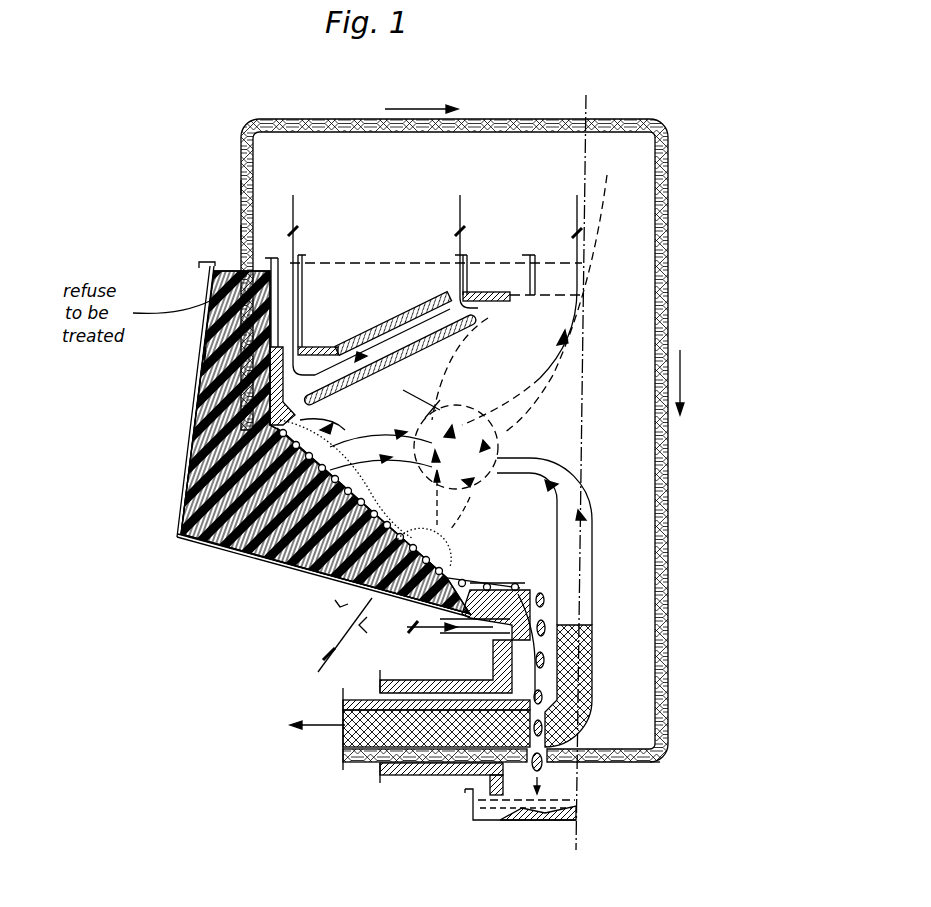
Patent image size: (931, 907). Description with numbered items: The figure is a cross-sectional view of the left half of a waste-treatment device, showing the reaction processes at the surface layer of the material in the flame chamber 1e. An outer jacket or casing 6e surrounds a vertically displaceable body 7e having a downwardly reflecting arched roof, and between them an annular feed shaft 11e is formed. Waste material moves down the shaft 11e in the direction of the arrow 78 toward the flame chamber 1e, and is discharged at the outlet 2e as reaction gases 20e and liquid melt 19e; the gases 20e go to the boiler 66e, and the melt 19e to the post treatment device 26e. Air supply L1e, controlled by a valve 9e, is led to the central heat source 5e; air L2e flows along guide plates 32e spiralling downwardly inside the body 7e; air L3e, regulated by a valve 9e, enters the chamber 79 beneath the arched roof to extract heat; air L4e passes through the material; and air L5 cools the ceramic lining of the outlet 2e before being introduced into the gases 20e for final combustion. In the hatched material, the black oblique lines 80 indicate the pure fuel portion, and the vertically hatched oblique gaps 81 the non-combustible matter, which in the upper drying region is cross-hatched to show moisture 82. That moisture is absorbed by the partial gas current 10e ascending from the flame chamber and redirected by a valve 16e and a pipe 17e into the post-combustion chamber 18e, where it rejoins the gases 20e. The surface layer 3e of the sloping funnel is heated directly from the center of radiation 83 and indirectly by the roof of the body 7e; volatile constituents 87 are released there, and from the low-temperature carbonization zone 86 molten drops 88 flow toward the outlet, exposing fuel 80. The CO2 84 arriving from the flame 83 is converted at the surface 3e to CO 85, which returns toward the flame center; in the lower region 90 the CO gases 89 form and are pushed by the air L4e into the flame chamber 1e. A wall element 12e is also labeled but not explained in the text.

The flame chamber 1e is at (641, 310).
The outlet 2e is at (543, 622).
The surface layer 3e is at (393, 521).
The central heat source 5e is at (600, 225).
The outer jacket or casing 6e is at (222, 550).
The vertically displaceable body 7e is at (284, 341).
The valve 9e is at (435, 451).
The partial gas current 10e is at (410, 395).
The annular feed shaft 11e is at (211, 402).
The housing wall insulation 12e is at (241, 232).
The valve 16e is at (247, 188).
The pipe 17e is at (655, 762).
The post-combustion chamber 18e is at (406, 772).
The liquid melt 19e is at (520, 816).
The reaction gases 20e is at (594, 656).
The post treatment device 26e is at (476, 802).
The guide plates 32e is at (473, 300).
The boiler 66e is at (306, 729).
The arrow 78 is at (208, 455).
The chamber 79 is at (395, 332).
The pure fuel portion 80 is at (206, 364).
The non-combustible matter 81 is at (204, 343).
The moisture 82 is at (240, 253).
The center of radiation 83 is at (478, 424).
The CO2 84 is at (415, 450).
The CO 85 is at (348, 452).
The low-temperature carbonization zone 86 is at (325, 428).
The volatile constituents 87 is at (368, 440).
The drops 88 is at (346, 479).
The CO gases 89 is at (466, 504).
The lower region 90 is at (435, 556).
The air supply L1e is at (528, 299).
The air amount L2e is at (465, 241).
The air amount L3e is at (298, 275).
The air feed L4e is at (314, 650).
The air portion L5 is at (435, 654).